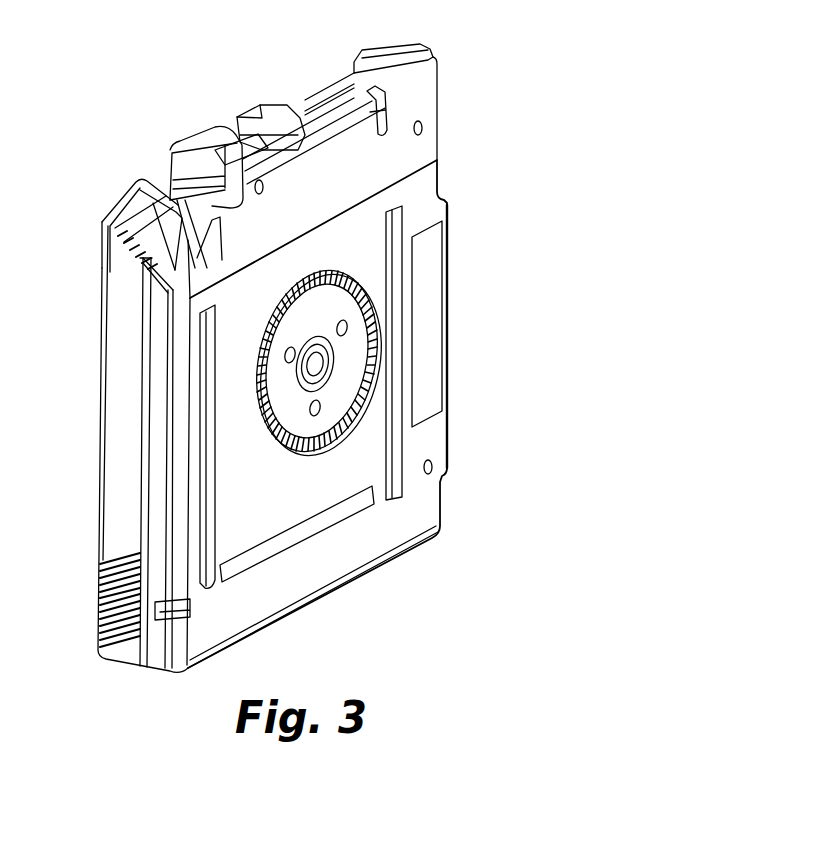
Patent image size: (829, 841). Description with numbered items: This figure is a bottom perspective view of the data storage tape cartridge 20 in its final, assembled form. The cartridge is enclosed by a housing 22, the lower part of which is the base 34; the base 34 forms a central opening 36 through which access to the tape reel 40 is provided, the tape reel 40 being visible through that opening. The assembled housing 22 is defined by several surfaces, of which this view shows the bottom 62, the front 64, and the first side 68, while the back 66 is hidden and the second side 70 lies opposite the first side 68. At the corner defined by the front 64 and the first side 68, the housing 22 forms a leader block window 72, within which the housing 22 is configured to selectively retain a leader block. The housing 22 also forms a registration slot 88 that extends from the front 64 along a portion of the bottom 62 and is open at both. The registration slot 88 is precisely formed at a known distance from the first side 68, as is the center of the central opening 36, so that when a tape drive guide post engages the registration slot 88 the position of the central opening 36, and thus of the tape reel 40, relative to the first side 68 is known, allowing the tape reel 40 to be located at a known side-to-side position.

The data storage tape cartridge 20 is at (228, 46).
The housing 22 is at (107, 517).
The base 34 is at (436, 103).
The central opening 36 is at (340, 273).
The tape reel 40 is at (347, 352).
The bottom 62 is at (355, 561).
The front 64 is at (270, 103).
The back 66 is at (265, 633).
The first side 68 is at (118, 388).
The second side 70 is at (440, 155).
The leader block window 72 is at (102, 197).
The registration slot 88 is at (366, 58).